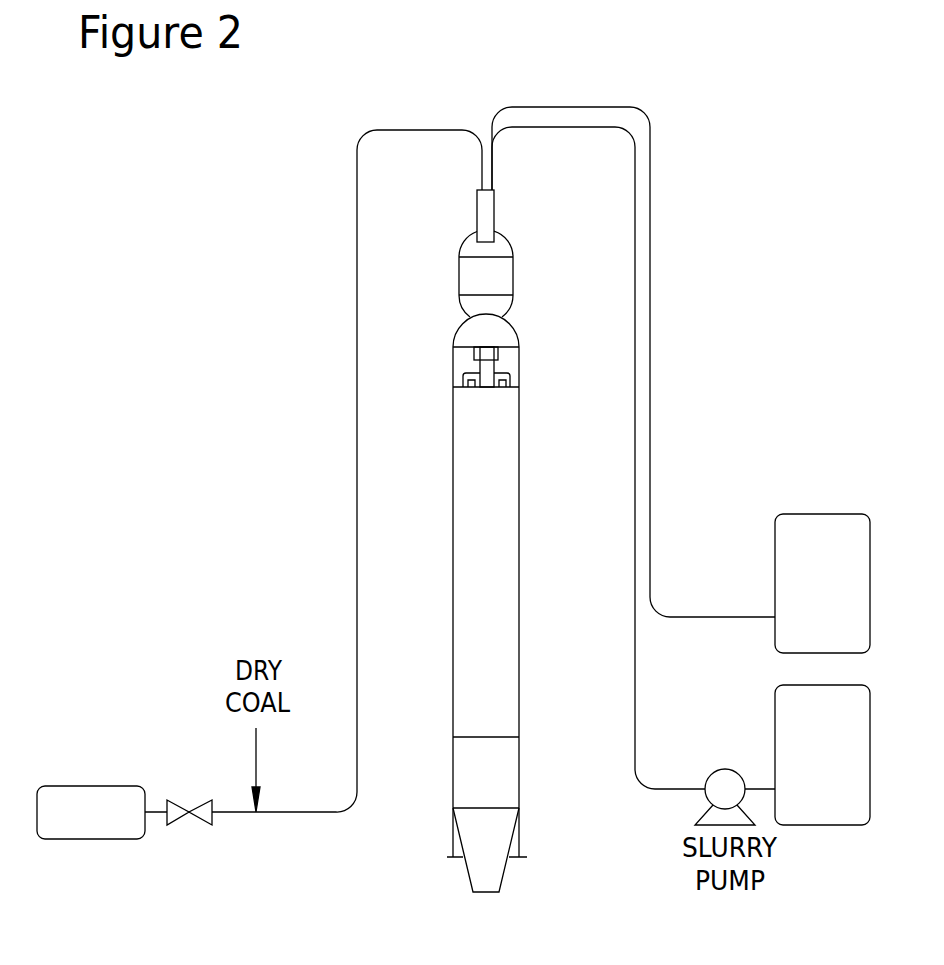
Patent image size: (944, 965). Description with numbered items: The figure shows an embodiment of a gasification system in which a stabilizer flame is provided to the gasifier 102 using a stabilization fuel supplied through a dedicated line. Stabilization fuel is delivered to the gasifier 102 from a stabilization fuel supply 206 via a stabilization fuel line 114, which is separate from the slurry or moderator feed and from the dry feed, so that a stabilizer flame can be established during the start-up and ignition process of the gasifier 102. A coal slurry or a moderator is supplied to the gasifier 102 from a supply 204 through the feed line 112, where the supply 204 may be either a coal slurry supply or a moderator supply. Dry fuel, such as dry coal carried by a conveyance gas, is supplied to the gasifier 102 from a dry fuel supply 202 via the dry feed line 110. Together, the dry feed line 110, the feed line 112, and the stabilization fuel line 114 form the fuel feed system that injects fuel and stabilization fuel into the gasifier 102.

The gasifier 102 is at (520, 430).
The dry feed line 110 is at (357, 353).
The slurry feed line 112 is at (635, 745).
The stabilization fuel line 114 is at (650, 572).
The dry fuel supply 202 is at (123, 786).
The supply 204 is at (777, 710).
The stabilization fuel supply 206 is at (777, 540).